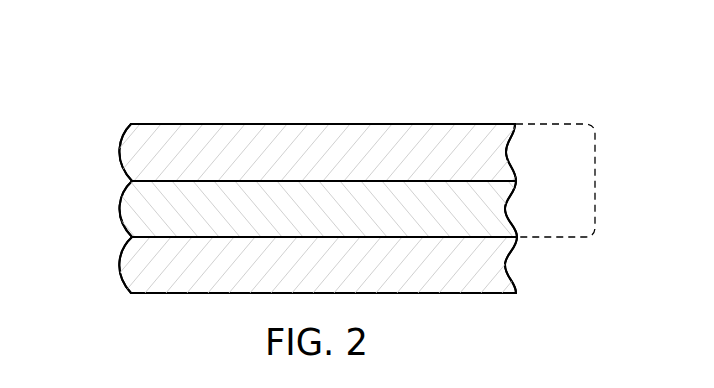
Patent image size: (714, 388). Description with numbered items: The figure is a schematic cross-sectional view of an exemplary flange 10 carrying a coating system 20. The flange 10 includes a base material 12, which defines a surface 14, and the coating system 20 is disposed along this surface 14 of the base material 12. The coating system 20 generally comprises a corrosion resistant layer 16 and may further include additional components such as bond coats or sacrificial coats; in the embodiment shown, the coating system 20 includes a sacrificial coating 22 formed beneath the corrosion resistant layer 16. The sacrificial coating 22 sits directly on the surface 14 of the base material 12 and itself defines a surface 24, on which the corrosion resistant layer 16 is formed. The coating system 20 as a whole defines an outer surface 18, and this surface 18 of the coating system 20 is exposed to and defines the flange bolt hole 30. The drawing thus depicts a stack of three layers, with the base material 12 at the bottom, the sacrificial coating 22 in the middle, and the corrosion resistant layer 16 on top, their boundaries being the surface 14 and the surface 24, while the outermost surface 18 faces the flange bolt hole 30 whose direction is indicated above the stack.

The flange 10 is at (131, 92).
The base material 12 is at (140, 262).
The surface 14 is at (485, 235).
The corrosion resistant layer 16 is at (135, 146).
The surface 18 is at (433, 124).
The coating system 20 is at (595, 163).
The sacrificial coating 22 is at (133, 212).
The surface 24 is at (478, 180).
The flange bolt hole 30 is at (310, 24).